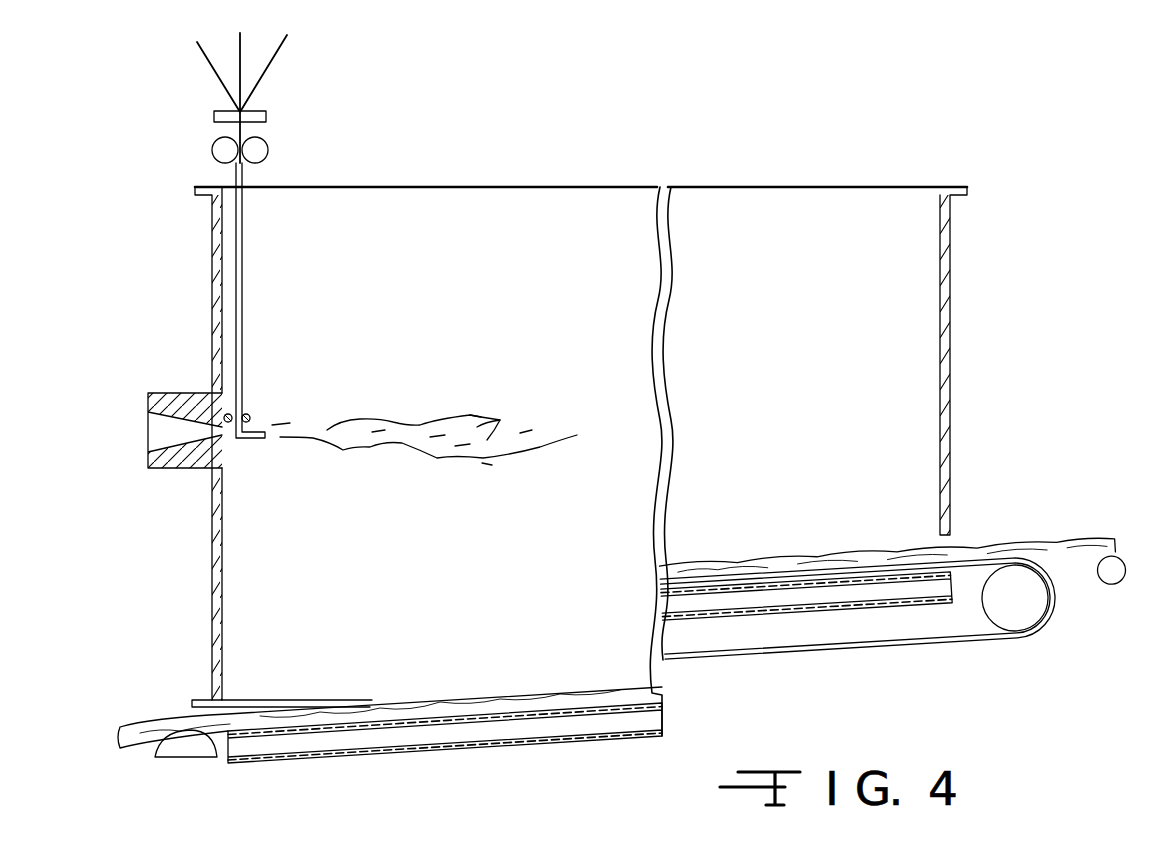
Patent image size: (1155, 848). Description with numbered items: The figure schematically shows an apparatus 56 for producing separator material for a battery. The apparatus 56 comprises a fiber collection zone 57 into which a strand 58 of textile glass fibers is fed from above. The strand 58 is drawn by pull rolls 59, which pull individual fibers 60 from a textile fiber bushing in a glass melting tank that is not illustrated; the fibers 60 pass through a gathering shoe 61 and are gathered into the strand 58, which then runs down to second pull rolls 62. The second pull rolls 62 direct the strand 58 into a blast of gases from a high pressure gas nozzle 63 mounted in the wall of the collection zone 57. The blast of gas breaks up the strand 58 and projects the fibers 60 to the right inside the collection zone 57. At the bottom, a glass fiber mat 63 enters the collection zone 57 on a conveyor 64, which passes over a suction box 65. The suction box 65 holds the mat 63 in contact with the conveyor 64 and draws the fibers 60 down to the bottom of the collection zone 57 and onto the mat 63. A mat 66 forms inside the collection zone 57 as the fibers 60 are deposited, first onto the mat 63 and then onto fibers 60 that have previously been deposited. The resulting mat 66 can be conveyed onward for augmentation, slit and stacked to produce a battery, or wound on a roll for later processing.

The apparatus 56 is at (968, 355).
The fiber collection zone 57 is at (933, 477).
The strand 58 is at (243, 280).
The pull rolls 59 is at (212, 152).
The fibers 60 is at (208, 66).
The gathering shoe 61 is at (248, 126).
The second pull rolls 62 is at (250, 414).
The high pressure gas nozzle 63 is at (150, 443).
The conveyor 64 is at (383, 728).
The suction box 65 is at (802, 610).
The mat 66 is at (887, 547).